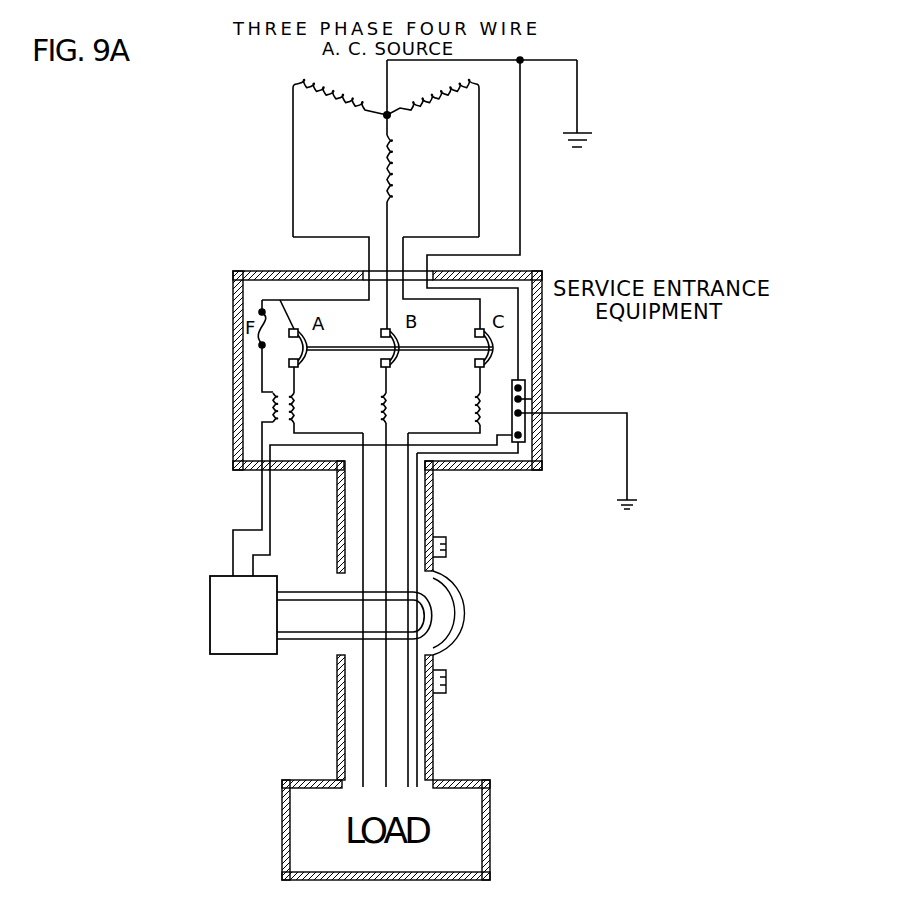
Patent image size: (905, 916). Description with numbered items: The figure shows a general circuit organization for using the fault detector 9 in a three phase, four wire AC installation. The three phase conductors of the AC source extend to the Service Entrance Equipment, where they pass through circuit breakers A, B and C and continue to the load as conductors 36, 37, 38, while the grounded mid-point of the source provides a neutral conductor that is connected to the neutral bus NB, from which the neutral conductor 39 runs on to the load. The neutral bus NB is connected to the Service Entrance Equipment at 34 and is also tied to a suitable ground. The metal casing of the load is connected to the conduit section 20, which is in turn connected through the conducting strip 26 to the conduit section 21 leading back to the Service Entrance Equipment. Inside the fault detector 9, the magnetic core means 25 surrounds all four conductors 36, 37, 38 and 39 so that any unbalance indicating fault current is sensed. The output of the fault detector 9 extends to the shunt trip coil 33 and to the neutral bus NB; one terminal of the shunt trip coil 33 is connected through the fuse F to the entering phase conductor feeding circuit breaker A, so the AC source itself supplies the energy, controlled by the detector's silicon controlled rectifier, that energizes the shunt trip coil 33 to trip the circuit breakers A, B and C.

The fault detector 9 is at (170, 598).
The conduit section 20 is at (433, 725).
The conduit section 21 is at (434, 508).
The magnetic core means 25 is at (313, 640).
The conducting strip 26 is at (463, 603).
The shunt trip coil 33 is at (261, 407).
The connection of neutral bus to Service Entrance Equipment 34 is at (540, 392).
The conductor 36 is at (362, 687).
The conductor 37 is at (385, 703).
The conductor 38 is at (407, 718).
The conductor 39 is at (416, 737).
The neutral bus NB is at (525, 383).